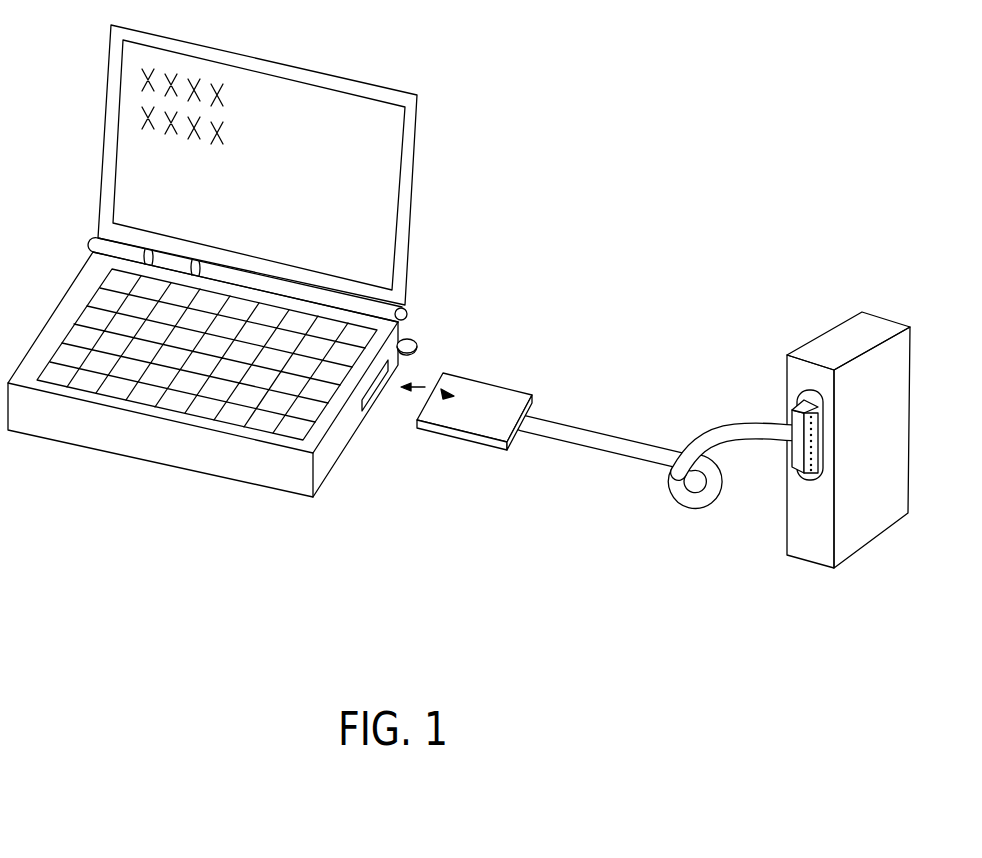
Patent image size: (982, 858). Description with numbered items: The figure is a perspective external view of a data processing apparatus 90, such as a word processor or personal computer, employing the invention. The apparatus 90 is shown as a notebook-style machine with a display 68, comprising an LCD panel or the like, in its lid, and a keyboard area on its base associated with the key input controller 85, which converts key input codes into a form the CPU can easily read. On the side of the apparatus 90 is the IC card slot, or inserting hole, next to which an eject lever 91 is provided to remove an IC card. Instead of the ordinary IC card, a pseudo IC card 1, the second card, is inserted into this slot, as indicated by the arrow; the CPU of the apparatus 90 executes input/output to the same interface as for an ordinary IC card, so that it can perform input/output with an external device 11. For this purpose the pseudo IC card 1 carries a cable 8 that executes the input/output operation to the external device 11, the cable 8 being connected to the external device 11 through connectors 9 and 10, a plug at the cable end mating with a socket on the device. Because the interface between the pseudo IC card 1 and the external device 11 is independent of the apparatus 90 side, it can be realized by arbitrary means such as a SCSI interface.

The pseudo IC card 1 is at (463, 443).
The cable 8 is at (595, 450).
The connector 9 is at (798, 462).
The connector 10 is at (821, 470).
The external device 11 is at (846, 318).
The display 68 is at (413, 153).
The key input controller 85 is at (213, 403).
The data processing apparatus 90 is at (410, 327).
The eject lever 91 is at (414, 340).